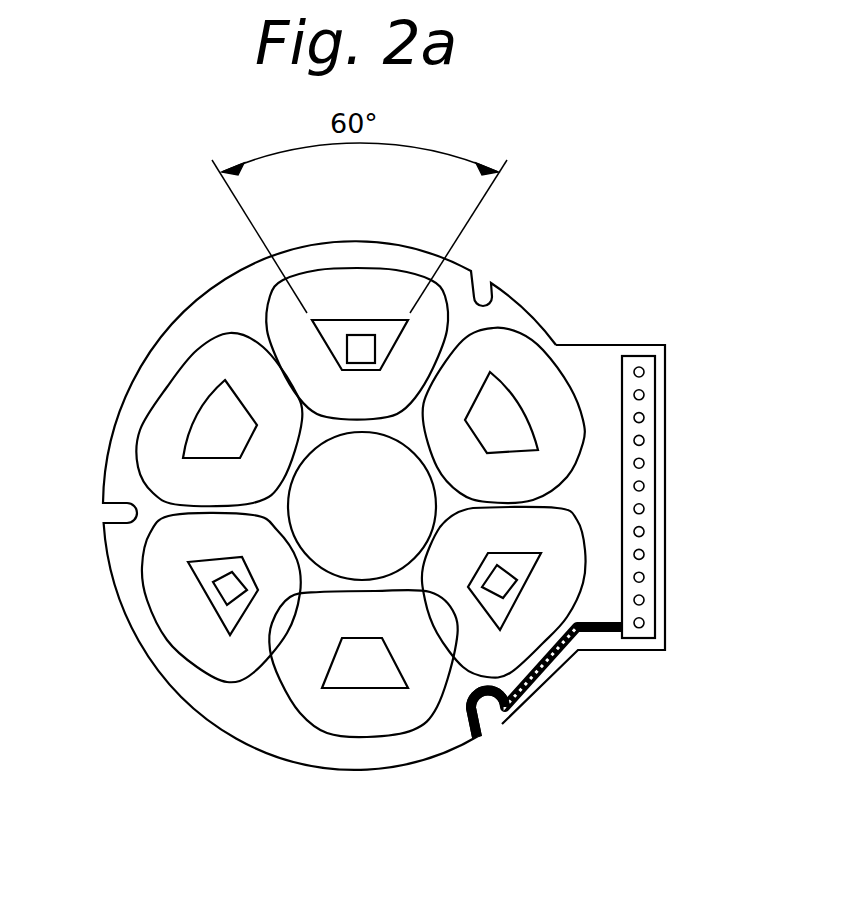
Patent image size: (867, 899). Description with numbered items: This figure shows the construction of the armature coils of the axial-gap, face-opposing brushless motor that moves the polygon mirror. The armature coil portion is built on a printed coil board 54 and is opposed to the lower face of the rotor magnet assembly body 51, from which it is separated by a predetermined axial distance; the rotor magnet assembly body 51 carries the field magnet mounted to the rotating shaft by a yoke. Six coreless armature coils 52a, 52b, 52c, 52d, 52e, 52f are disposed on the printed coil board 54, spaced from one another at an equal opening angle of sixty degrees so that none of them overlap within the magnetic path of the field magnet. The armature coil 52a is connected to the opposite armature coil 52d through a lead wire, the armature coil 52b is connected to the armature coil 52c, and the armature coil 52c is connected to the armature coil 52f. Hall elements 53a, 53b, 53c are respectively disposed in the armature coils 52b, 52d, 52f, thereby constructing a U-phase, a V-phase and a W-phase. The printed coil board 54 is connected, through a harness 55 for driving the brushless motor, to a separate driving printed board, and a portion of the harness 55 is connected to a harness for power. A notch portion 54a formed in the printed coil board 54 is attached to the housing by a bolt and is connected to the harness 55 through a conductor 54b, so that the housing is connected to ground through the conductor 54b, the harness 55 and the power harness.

The rotor magnet assembly body 51 is at (530, 268).
The armature coil 52a is at (318, 710).
The armature coil 52b is at (160, 580).
The armature coil 52c is at (163, 438).
The armature coil 52d is at (317, 293).
The armature coil 52e is at (532, 377).
The armature coil 52f is at (445, 563).
The Hall element 53a is at (228, 593).
The Hall element 53b is at (363, 337).
The Hall element 53c is at (503, 587).
The printed coil board 54 is at (523, 317).
The notch portion 54a is at (495, 722).
The conductor 54b is at (605, 634).
The harness 55 is at (648, 517).